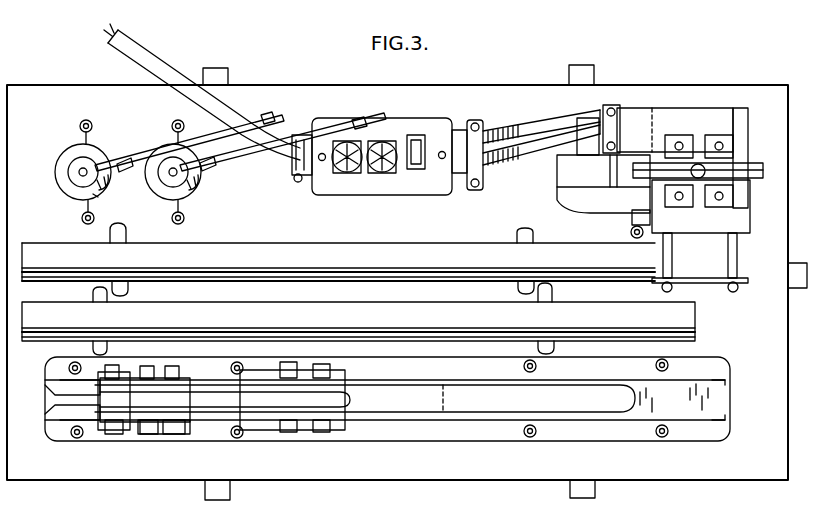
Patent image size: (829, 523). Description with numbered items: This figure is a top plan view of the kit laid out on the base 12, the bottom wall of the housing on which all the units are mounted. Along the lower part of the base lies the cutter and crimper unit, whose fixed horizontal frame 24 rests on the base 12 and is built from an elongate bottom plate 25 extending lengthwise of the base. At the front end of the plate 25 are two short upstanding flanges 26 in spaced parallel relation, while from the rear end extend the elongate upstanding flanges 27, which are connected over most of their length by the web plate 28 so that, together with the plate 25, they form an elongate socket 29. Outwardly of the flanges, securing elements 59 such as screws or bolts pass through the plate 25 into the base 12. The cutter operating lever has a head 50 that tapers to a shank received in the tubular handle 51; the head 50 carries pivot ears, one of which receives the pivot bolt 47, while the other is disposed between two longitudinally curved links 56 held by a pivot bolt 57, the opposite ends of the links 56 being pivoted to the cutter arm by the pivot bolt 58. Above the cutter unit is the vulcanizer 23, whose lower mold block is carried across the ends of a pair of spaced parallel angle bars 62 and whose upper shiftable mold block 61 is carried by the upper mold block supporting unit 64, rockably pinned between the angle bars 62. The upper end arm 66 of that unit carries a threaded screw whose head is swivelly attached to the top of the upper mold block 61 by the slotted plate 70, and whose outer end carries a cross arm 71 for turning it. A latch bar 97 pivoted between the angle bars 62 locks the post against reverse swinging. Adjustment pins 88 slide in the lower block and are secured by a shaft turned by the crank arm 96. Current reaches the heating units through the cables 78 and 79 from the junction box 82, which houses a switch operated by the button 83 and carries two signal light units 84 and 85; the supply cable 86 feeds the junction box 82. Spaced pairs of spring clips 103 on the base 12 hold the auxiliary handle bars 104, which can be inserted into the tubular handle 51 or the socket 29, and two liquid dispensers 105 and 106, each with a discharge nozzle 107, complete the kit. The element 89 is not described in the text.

The base 12 is at (480, 467).
The vulcanizer 23 is at (686, 102).
The fixed horizontal frame 24 is at (733, 427).
The elongate bottom plate 25 is at (645, 440).
The short upstanding flanges 26 is at (52, 414).
The elongate upstanding flanges 27 is at (408, 422).
The web plate 28 is at (720, 400).
The elongate socket 29 is at (727, 374).
The pivot bolt 47 is at (152, 435).
The head 50 is at (208, 398).
The tubular handle 51 is at (380, 414).
The longitudinally curved links 56 is at (185, 411).
The pivot bolt 57 is at (178, 434).
The pivot bolt 58 is at (110, 432).
The securing elements 59 is at (533, 440).
The upper shiftable mold block 61 is at (741, 110).
The angle bars 62 is at (583, 212).
The upper mold block supporting unit 64 is at (338, 262).
The upper end arm 66 is at (703, 182).
The slotted plate 70 is at (725, 150).
The cross arm 71 is at (743, 168).
The cable 78 is at (492, 121).
The cable 79 is at (508, 160).
The junction box 82 is at (430, 110).
The button 83 is at (418, 160).
The electric signal light unit 84 is at (385, 175).
The electric signal light unit 85 is at (347, 175).
The cable 86 is at (161, 68).
The pins 88 is at (740, 262).
The feet 89 is at (740, 283).
The crank arm 96 is at (640, 238).
The latch bar 97 is at (564, 180).
The spring clips 103 is at (110, 300).
The auxiliary handle bar 104 is at (383, 265).
The liquid dispenser 105 is at (66, 155).
The liquid dispenser 106 is at (166, 146).
The discharge nozzle 107 is at (255, 136).